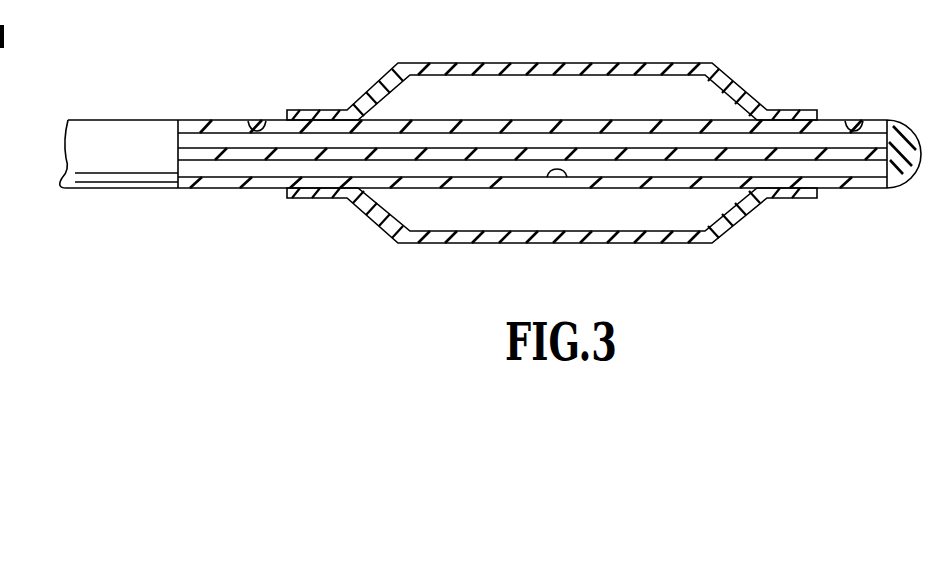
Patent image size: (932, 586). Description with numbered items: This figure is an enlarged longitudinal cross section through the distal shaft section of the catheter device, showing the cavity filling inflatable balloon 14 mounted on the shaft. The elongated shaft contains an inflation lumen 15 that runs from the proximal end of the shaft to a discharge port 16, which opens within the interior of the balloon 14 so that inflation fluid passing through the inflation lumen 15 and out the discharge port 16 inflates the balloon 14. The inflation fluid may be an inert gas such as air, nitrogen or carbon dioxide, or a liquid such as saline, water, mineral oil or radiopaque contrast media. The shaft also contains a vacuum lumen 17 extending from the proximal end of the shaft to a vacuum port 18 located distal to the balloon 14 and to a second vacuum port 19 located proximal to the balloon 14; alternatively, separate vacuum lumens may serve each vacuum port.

The inflatable balloon 14 is at (552, 63).
The inflation lumen 15 is at (242, 167).
The discharge port 16 is at (557, 186).
The vacuum lumen 17 is at (213, 137).
The vacuum port 18 is at (853, 122).
The vacuum port 19 is at (257, 121).